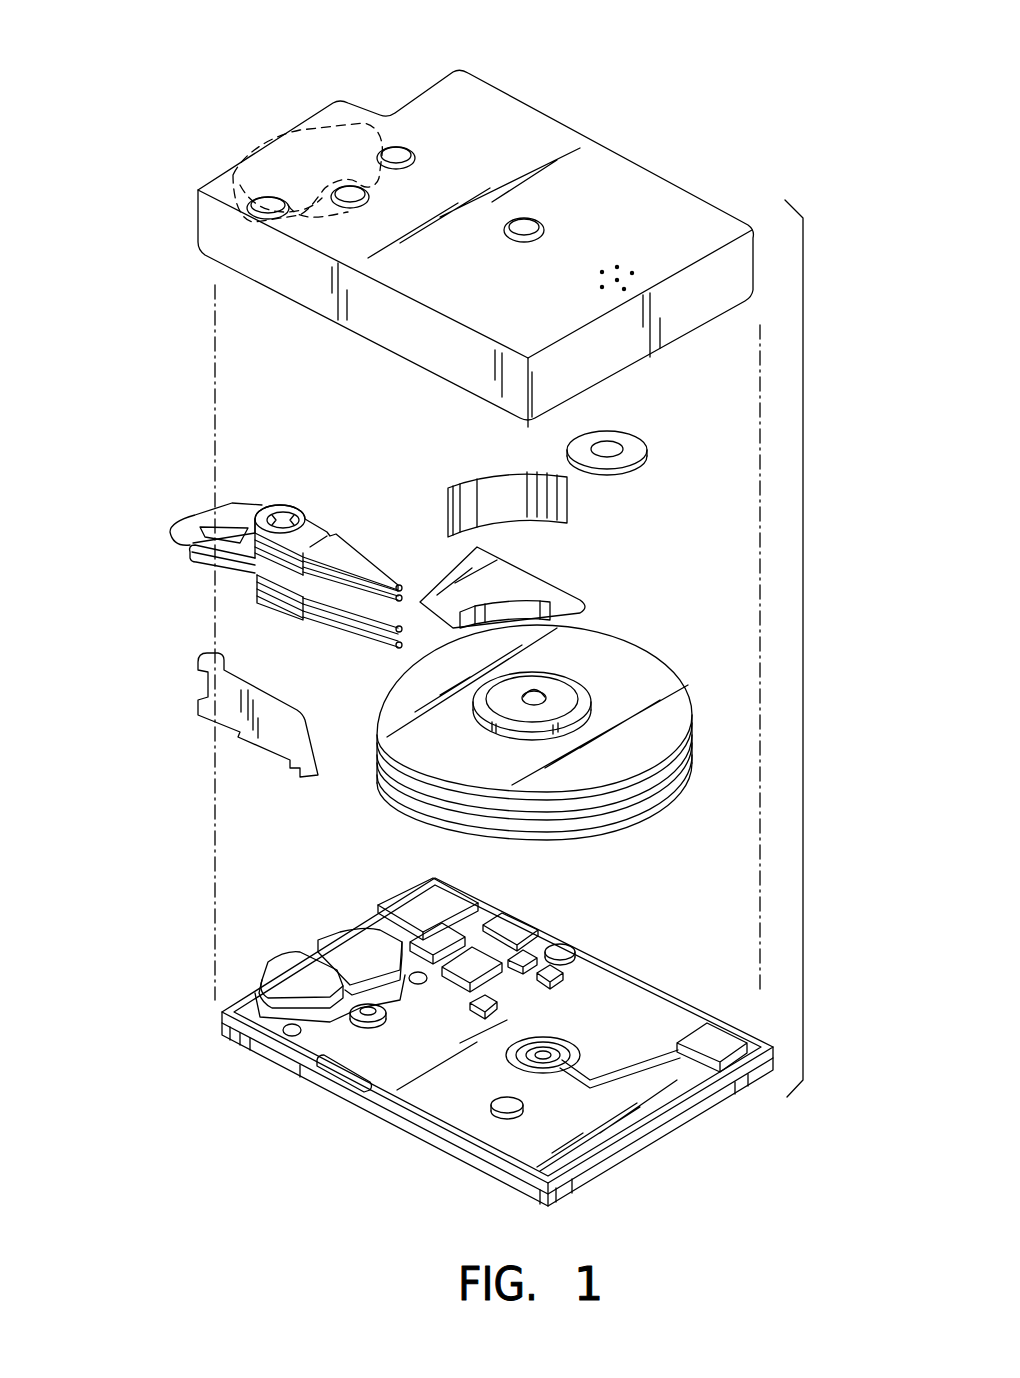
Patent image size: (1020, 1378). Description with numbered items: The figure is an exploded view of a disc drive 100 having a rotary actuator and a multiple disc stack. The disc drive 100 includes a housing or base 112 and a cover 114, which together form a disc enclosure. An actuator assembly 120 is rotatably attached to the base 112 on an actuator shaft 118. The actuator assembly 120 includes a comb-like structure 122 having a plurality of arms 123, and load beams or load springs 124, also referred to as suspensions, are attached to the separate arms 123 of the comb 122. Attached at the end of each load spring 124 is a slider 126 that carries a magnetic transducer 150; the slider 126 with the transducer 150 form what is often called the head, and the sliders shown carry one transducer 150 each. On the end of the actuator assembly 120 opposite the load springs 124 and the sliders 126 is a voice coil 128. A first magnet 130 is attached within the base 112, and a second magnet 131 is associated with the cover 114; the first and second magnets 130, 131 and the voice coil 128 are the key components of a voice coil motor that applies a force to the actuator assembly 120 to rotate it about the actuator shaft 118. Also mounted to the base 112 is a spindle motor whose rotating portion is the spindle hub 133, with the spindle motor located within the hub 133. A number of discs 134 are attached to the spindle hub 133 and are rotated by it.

The disc drive 100 is at (658, 100).
The base 112 is at (660, 1010).
The cover 114 is at (640, 190).
The actuator shaft 118 is at (285, 513).
The actuator assembly 120 is at (238, 563).
The comb-like structure 122 is at (303, 620).
The arms 123 is at (353, 543).
The load springs 124 is at (355, 548).
The slider 126 is at (400, 583).
The voice coil 128 is at (190, 520).
The first magnet 130 is at (283, 970).
The second magnet 131 is at (307, 133).
The spindle hub 133 is at (543, 690).
The discs 134 is at (657, 675).
The magnetic transducer 150 is at (405, 589).